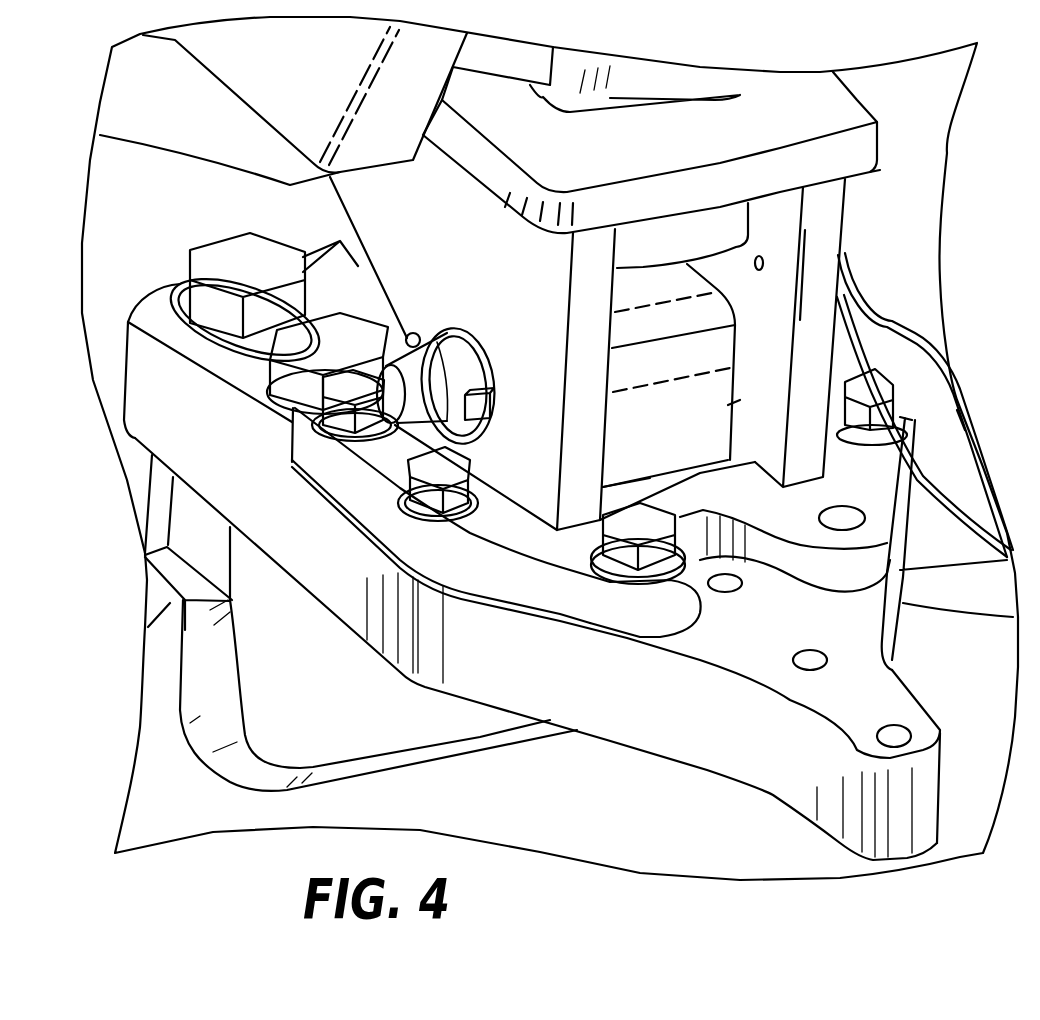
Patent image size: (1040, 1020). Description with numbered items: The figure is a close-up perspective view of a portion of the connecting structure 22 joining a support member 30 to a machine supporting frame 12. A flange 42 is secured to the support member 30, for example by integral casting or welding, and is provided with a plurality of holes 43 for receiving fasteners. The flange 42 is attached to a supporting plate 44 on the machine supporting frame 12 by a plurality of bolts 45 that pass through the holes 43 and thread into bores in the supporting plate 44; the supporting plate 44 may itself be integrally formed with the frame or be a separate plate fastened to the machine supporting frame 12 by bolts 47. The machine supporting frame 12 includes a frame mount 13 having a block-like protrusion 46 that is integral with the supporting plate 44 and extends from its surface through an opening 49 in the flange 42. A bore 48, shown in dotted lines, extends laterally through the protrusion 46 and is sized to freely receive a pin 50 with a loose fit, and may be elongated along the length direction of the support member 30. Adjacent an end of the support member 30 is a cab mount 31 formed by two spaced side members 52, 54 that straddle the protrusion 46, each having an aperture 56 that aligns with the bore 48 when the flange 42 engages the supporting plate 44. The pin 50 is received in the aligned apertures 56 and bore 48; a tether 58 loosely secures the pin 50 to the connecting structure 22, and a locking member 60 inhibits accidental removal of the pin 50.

The machine supporting frame 12 is at (575, 805).
The frame mount 13 is at (753, 410).
The connecting structure 22 is at (893, 322).
The support member 30 is at (843, 227).
The cab mount 31 is at (900, 160).
The flange 42 is at (526, 537).
The holes 43 is at (817, 517).
The supporting plate 44 is at (764, 648).
The bolts 45 is at (452, 479).
The protrusion 46 is at (714, 415).
The bolts 47 is at (262, 275).
The bore 48 is at (637, 393).
The opening 49 is at (647, 478).
The pin 50 is at (470, 327).
The side member 52 is at (546, 315).
The side member 54 is at (782, 327).
The aperture 56 is at (498, 387).
The tether 58 is at (957, 407).
The locking member 60 is at (436, 323).